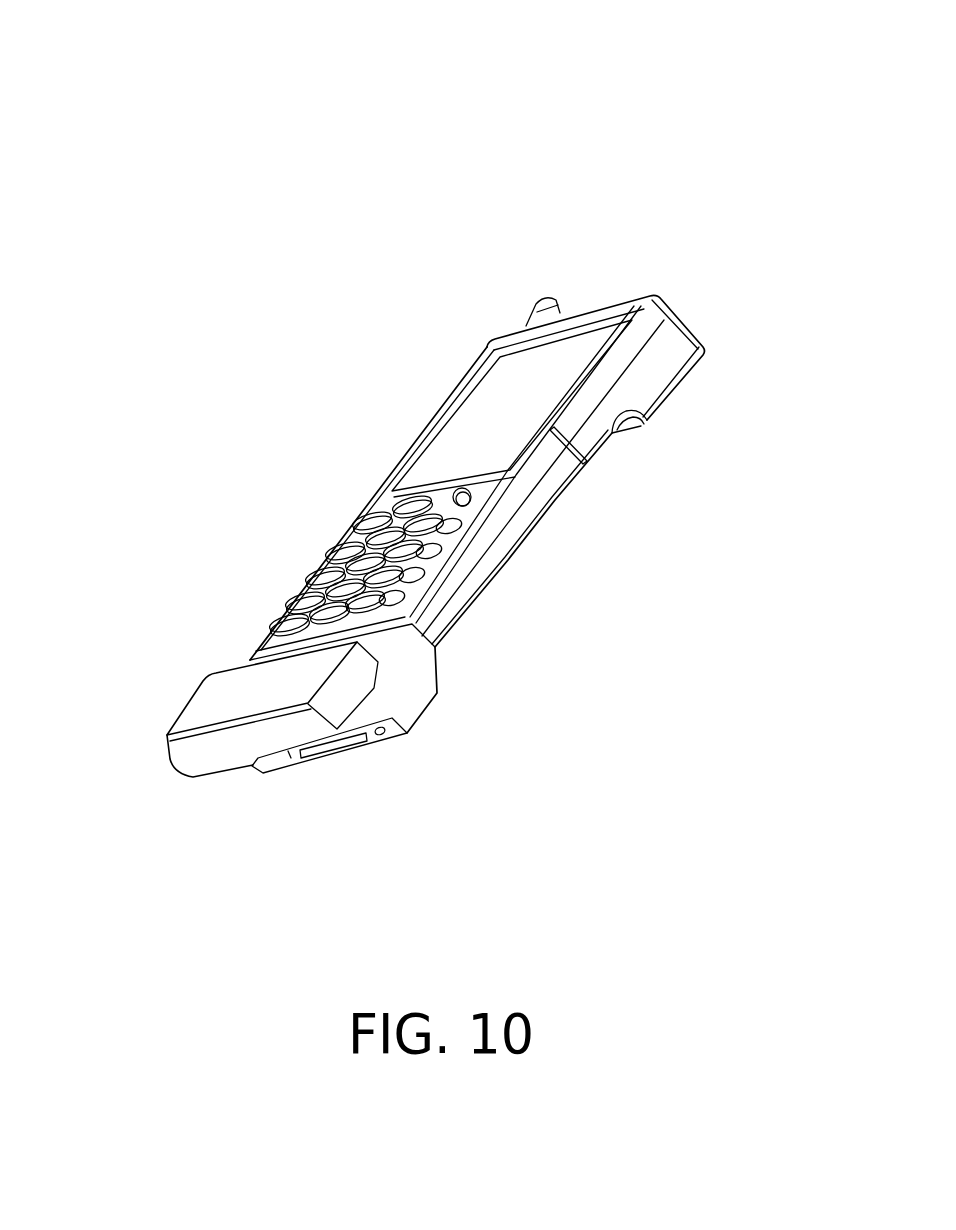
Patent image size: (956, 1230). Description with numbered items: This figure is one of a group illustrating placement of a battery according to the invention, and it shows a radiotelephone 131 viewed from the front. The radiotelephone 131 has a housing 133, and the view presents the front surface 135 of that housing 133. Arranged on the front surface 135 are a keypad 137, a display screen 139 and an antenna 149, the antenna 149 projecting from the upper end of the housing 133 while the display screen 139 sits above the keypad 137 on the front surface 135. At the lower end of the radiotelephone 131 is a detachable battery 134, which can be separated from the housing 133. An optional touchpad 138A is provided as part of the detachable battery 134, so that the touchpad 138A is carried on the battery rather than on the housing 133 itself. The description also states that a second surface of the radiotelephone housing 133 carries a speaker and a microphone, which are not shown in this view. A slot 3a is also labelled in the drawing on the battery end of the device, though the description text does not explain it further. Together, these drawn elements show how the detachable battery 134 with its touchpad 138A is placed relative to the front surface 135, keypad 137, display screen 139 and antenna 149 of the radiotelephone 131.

The radiotelephone 131 is at (723, 125).
The housing 133 is at (413, 615).
The detachable battery 134 is at (215, 743).
The front surface 135 is at (225, 623).
The keypad 137 is at (317, 572).
The touchpad 138A is at (230, 693).
The display screen 139 is at (515, 393).
The antenna 149 is at (555, 296).
The slot 3a is at (287, 760).